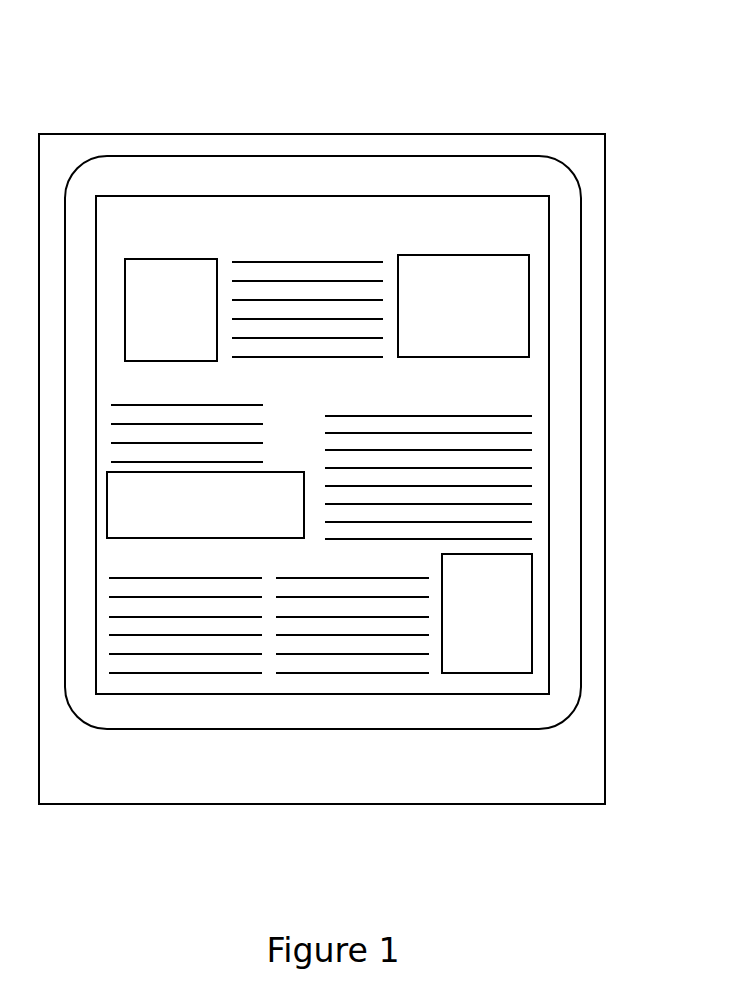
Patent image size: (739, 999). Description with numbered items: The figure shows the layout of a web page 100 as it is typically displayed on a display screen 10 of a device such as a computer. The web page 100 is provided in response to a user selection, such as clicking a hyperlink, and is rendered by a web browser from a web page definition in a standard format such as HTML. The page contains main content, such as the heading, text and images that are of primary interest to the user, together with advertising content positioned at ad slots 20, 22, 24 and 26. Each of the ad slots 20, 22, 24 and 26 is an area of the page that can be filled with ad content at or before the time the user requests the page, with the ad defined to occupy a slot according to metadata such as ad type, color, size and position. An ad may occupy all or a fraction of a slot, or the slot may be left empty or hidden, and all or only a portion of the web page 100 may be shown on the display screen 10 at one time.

The display screen 10 is at (307, 780).
The web page 100 is at (608, 87).
The ad slot 20 is at (155, 301).
The ad slot 22 is at (452, 297).
The ad slot 24 is at (193, 507).
The ad slot 26 is at (477, 599).